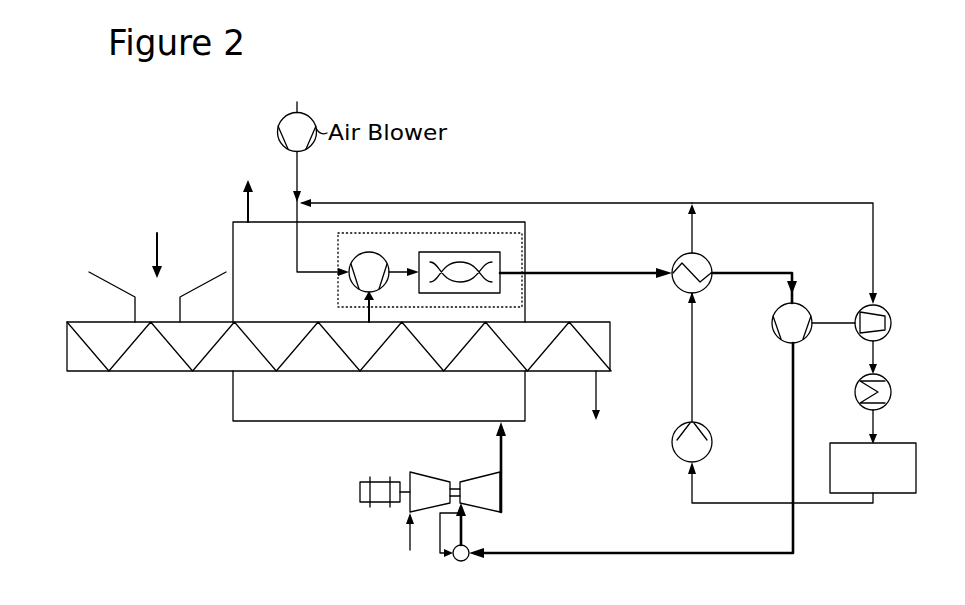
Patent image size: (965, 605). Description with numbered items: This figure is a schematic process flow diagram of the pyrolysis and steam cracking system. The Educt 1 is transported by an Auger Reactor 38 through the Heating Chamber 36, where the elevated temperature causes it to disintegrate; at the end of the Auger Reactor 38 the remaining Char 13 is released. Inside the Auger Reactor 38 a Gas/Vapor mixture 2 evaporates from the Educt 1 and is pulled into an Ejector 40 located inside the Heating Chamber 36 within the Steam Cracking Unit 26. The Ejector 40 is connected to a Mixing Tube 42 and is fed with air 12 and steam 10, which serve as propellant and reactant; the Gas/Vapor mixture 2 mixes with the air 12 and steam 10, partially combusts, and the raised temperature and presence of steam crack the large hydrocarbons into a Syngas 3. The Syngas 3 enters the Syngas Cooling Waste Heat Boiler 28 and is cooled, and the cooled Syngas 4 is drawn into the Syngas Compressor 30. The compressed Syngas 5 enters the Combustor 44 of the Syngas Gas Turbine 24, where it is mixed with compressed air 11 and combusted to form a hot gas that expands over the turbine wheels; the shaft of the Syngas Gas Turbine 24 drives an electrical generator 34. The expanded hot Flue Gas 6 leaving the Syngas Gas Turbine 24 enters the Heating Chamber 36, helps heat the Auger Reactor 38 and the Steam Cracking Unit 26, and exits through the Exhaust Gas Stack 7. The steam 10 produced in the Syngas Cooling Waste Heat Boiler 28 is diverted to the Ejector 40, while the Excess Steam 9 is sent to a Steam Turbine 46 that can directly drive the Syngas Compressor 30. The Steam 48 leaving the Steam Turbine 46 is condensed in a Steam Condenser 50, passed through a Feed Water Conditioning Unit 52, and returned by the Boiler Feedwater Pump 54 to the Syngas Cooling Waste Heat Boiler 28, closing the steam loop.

The Educt 1 is at (157, 277).
The Gas/Vapor mixture 2 is at (369, 315).
The Syngas 3 is at (600, 273).
The cooled Syngas 4 is at (750, 273).
The compressed Syngas 5 is at (540, 553).
The Flue Gas 6 is at (501, 440).
The Exhaust Gas Stack 7 is at (243, 186).
The Excess Steam 9 is at (760, 203).
The steam 10 is at (496, 192).
The compressed air 11 is at (410, 541).
The air 12 is at (298, 173).
The Char 13 is at (594, 403).
The Syngas Gas Turbine 24 is at (460, 481).
The Steam Cracking Unit 26 is at (522, 234).
The Syngas Cooling Waste Heat Boiler 28 is at (677, 289).
The Syngas Compressor 30 is at (772, 323).
The electrical generator 34 is at (358, 496).
The Heating Chamber 36 is at (262, 420).
The Auger Reactor 38 is at (205, 363).
The Ejector 40 is at (354, 257).
The Mixing Tube 42 is at (460, 252).
The Combustor 44 is at (461, 561).
The Steam Turbine 46 is at (891, 323).
The Steam 48 is at (874, 353).
The Steam Condenser 50 is at (891, 392).
The Feed Water Conditioning Unit 52 is at (916, 473).
The Boiler Feedwater Pump 54 is at (711, 438).